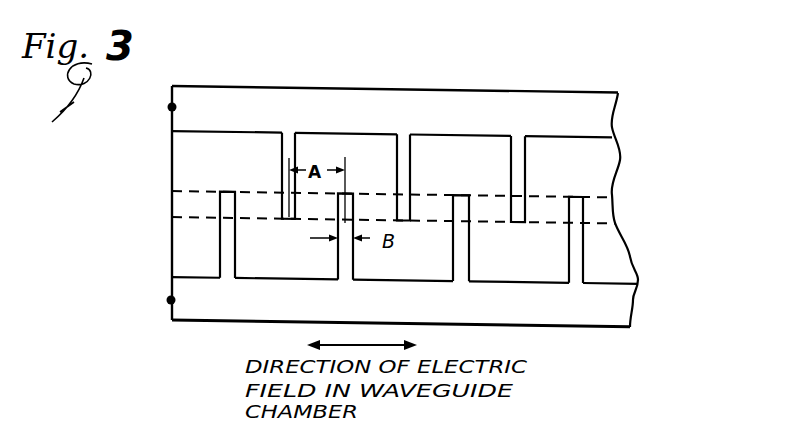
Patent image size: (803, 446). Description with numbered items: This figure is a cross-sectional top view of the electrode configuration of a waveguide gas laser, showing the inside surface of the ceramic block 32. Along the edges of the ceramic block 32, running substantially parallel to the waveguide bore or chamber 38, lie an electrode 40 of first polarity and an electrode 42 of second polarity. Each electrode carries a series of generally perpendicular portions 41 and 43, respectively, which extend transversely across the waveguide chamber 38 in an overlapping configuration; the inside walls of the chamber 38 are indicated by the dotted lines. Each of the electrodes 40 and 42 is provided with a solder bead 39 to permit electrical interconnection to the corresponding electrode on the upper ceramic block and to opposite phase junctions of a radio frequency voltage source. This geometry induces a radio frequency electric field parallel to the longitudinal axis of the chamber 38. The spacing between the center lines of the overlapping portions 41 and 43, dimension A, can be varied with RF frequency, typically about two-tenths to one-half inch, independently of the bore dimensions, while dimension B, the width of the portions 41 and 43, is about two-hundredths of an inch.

The ceramic block 32 is at (187, 160).
The waveguide bore or chamber 38 is at (593, 217).
The solder bead 39 is at (168, 106).
The electrode of first polarity 40 is at (620, 108).
The perpendicular portions 41 is at (282, 148).
The electrode of second polarity 42 is at (638, 300).
The perpendicular portions 43 is at (343, 263).